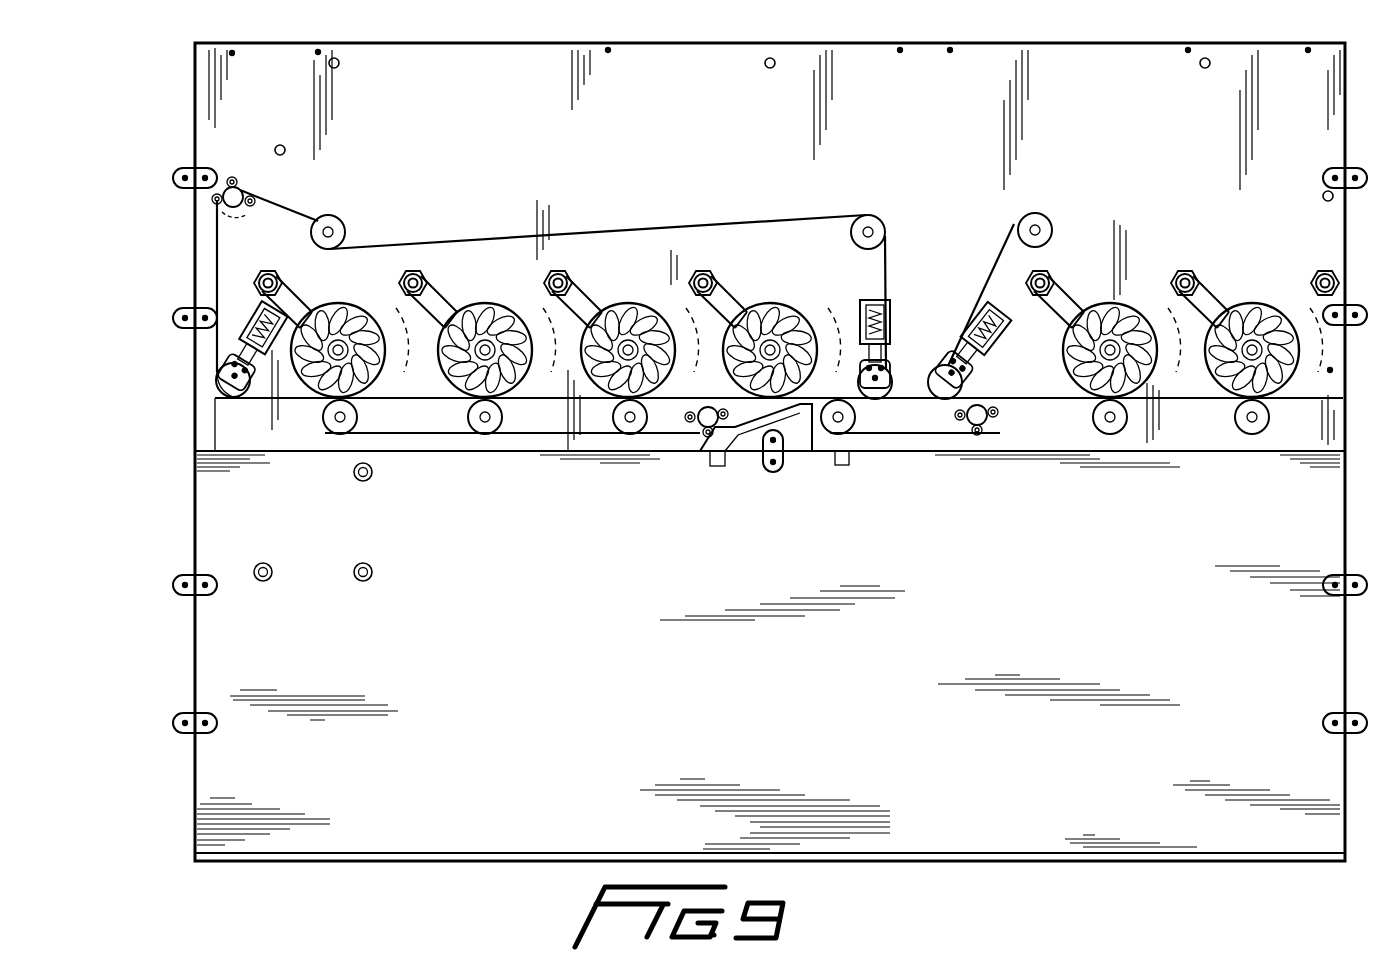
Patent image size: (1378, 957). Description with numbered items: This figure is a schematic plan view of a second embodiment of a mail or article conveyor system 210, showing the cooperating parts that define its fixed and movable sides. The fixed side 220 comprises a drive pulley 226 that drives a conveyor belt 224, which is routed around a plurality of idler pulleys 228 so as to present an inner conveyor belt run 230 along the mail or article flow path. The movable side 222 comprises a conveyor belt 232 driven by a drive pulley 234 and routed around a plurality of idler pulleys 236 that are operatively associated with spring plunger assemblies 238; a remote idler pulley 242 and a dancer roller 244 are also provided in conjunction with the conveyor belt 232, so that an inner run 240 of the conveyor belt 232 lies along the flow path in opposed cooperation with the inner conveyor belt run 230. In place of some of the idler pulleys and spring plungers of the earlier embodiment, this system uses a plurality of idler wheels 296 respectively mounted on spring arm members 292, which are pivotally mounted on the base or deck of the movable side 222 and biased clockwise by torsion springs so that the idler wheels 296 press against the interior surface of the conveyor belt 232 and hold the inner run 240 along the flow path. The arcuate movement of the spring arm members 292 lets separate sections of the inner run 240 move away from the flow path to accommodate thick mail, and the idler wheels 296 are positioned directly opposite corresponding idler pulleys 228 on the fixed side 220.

The conveyor system 210 is at (697, 190).
The fixed side 220 is at (794, 529).
The movable side 222 is at (534, 139).
The conveyor belt 224 is at (413, 437).
The drive pulley 226 is at (706, 428).
The idler pulleys 228 is at (320, 437).
The inner conveyor belt run 230 is at (445, 437).
The conveyor belt 232 is at (625, 232).
The drive pulley 234 is at (240, 186).
The idler pulleys 236 is at (898, 372).
The spring plunger assemblies 238 is at (247, 313).
The inner run 240 is at (545, 437).
The remote idler pulley 242 is at (869, 214).
The dancer roller 244 is at (336, 226).
The spring arm members 292 is at (287, 293).
The idler wheels 296 is at (372, 303).